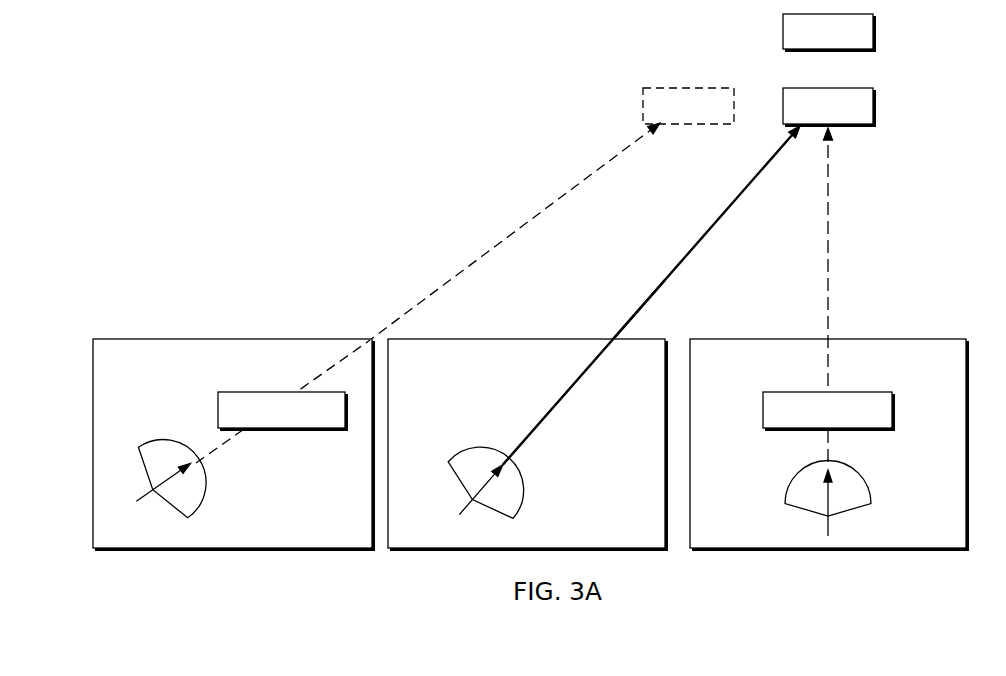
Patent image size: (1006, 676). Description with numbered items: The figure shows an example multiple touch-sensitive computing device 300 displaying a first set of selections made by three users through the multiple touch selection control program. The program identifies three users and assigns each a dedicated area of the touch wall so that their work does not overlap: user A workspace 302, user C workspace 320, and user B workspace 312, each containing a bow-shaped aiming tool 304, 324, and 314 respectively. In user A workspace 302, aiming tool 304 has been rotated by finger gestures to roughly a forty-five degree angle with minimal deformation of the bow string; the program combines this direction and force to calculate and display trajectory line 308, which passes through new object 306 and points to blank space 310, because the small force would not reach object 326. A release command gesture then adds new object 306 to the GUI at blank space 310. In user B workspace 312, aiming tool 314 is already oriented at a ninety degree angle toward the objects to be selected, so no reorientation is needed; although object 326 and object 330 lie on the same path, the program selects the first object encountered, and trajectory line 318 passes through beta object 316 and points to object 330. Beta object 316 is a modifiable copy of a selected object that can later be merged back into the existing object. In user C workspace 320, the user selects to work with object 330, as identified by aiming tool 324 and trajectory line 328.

The multiple touch-sensitive computing device 300 is at (318, 57).
The user A workspace 302 is at (232, 338).
The aiming tool 304 is at (205, 492).
The new object 306 is at (218, 408).
The trajectory line 308 is at (490, 252).
The blank space 310 is at (688, 87).
The user B workspace 312 is at (752, 338).
The aiming tool 314 is at (870, 479).
The beta object 316 is at (895, 412).
The trajectory line 318 is at (826, 236).
The user C workspace 320 is at (525, 338).
The aiming tool 324 is at (523, 489).
The object 326 is at (876, 33).
The trajectory line 328 is at (656, 291).
The object 330 is at (876, 108).